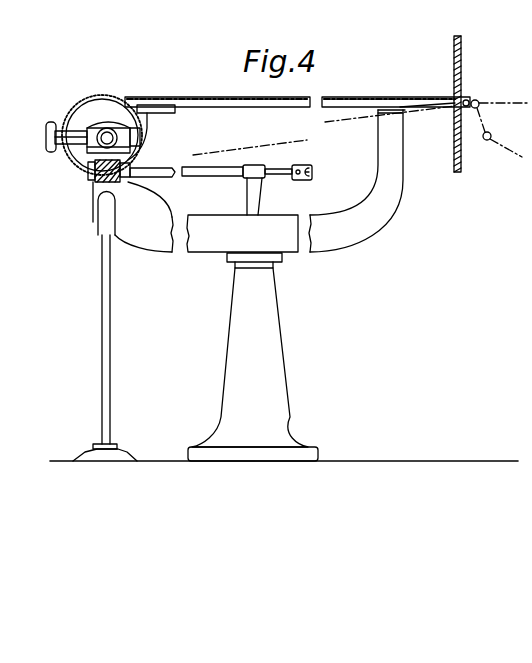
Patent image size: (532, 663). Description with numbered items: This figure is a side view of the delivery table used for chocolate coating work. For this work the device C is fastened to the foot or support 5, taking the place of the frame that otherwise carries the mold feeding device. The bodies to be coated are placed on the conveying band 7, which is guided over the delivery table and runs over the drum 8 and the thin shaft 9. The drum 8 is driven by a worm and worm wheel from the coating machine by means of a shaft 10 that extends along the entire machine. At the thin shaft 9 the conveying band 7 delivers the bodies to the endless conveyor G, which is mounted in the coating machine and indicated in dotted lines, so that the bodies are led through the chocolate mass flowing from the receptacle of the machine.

The foot or support 5 is at (232, 352).
The conveying band 7 is at (186, 97).
The drum 8 is at (100, 110).
The thin shaft 9 is at (471, 100).
The shaft 10 is at (203, 177).
The device C is at (208, 252).
The endless conveyor G is at (500, 107).